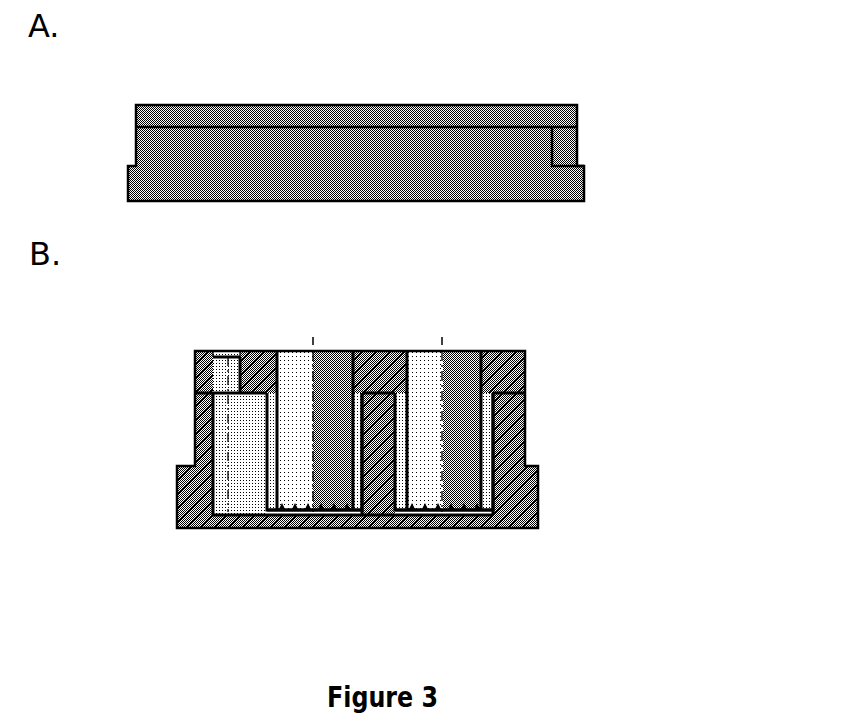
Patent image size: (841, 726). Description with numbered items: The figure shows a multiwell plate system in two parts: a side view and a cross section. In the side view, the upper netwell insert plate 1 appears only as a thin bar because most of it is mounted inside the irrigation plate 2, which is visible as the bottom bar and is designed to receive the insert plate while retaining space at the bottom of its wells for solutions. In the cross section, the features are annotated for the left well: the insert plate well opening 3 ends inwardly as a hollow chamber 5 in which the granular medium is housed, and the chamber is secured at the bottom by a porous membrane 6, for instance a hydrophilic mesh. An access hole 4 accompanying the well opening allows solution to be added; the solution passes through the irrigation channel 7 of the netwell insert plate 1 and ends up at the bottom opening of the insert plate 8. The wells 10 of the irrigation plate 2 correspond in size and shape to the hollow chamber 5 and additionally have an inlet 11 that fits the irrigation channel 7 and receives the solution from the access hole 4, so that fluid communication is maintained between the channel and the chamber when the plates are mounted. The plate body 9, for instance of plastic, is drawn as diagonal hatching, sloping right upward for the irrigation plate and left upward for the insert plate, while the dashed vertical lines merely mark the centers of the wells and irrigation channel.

The netwell insert plate 1 is at (578, 116).
The irrigation plate 2 is at (585, 175).
The insert plate well opening 3 is at (330, 350).
The access hole 4 is at (217, 350).
The hollow chamber 5 is at (333, 515).
The porous membrane 6 is at (283, 512).
The irrigation channel 7 is at (223, 375).
The bottom opening of the insert plate 8 is at (213, 516).
The plate body 9 is at (290, 350).
The wells of the irrigation plate 10 is at (365, 505).
The inlet 11 is at (222, 517).